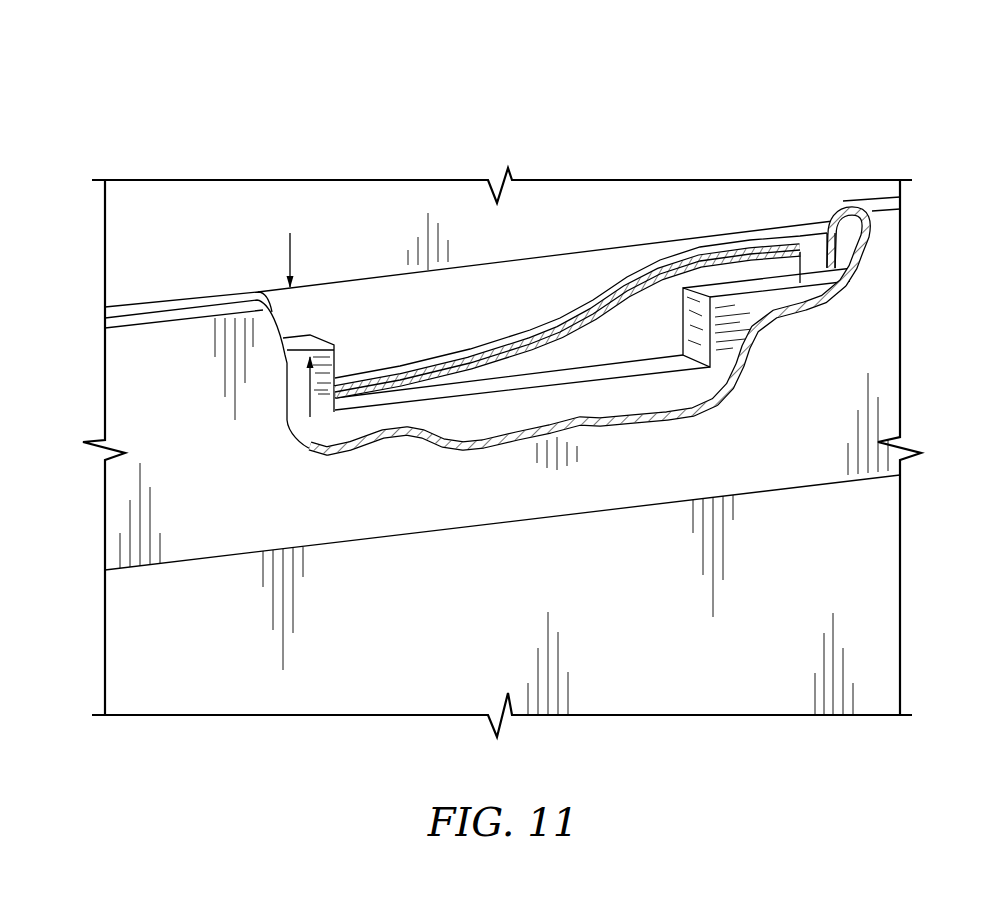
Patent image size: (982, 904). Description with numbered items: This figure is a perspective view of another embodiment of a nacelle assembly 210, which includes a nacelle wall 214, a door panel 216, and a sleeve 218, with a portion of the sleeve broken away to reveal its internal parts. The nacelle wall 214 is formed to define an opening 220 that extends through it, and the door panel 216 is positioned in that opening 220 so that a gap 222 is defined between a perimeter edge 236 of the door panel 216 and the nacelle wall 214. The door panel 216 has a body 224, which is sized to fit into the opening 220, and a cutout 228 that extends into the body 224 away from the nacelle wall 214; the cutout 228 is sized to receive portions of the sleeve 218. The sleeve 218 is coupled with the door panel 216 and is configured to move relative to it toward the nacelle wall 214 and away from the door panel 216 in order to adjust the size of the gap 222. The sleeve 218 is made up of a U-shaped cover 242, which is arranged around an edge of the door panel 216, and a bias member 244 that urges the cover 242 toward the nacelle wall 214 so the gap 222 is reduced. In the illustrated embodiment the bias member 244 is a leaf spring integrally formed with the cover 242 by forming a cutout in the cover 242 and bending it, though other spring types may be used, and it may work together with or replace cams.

The nacelle assembly 210 is at (153, 110).
The nacelle wall 214 is at (727, 210).
The door panel 216 is at (100, 655).
The sleeve 218 is at (100, 320).
The opening 220 is at (497, 323).
The gap 222 is at (290, 253).
The body 224 is at (415, 688).
The cutout 228 is at (287, 423).
The perimeter edge 236 is at (800, 266).
The cover 242 is at (157, 420).
The bias member 244 is at (618, 278).